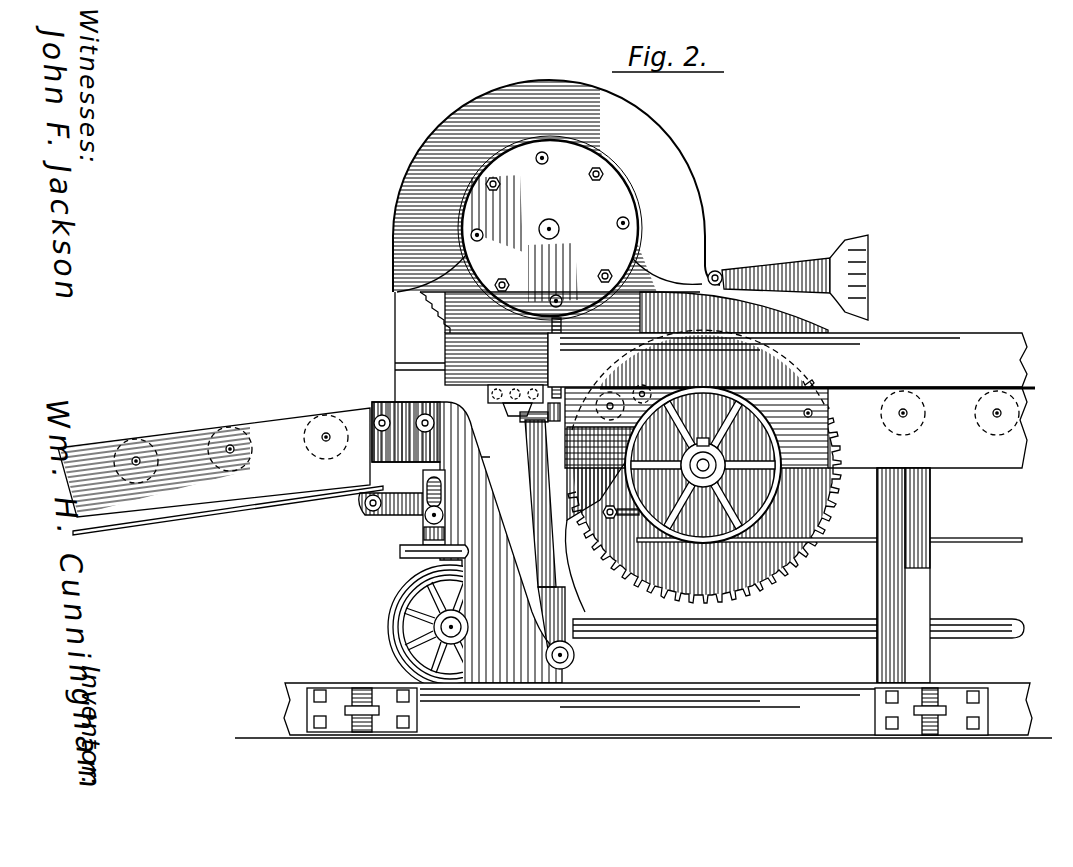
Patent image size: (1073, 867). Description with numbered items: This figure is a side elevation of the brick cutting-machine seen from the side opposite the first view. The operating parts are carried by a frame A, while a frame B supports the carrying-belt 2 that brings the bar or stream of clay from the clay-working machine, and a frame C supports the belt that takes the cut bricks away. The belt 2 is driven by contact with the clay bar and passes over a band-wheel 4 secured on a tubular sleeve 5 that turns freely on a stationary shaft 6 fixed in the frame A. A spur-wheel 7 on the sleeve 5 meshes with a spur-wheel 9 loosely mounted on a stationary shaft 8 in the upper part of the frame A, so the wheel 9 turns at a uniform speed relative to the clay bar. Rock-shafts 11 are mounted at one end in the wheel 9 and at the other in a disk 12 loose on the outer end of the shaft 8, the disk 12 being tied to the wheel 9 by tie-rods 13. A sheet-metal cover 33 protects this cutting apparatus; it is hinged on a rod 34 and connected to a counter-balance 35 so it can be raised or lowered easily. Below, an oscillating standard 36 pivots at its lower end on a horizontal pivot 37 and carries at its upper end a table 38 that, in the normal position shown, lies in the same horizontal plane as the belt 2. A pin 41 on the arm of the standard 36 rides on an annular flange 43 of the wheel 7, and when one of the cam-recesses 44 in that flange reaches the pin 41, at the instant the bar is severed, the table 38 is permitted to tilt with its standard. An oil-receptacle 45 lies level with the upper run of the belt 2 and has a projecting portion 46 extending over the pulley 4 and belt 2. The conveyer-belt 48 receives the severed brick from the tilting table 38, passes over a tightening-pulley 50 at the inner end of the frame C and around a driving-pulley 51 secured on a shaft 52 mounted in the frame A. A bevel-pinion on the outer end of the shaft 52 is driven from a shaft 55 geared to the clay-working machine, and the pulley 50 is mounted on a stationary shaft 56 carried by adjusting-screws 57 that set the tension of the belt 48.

The carrying-belt 2 is at (1030, 388).
The band-wheel 4 is at (815, 538).
The tubular shaft or sleeve 5 is at (745, 476).
The stationary shaft 6 is at (787, 360).
The spur-wheel 7 is at (803, 560).
The stationary shaft 8 is at (556, 228).
The spur-wheel 9 is at (420, 300).
The rock-shafts 11 is at (542, 164).
The disk 12 is at (612, 184).
The tie-rods 13 is at (501, 184).
The cover 33 is at (641, 140).
The rod 34 is at (722, 274).
The counter-balance 35 is at (870, 280).
The oscillating or rocking standard 36 is at (536, 526).
The horizontal pivot 37 is at (575, 655).
The table 38 is at (512, 411).
The pin 41 is at (608, 520).
The flange 43 is at (655, 560).
The cam-recesses 44 is at (762, 584).
The oil-receptacle 45 is at (611, 402).
The projecting portion 46 is at (660, 390).
The conveyer-belt 48 is at (342, 408).
The tightening-pulley 50 is at (402, 540).
The driving-pulley 51 is at (429, 627).
The shaft 52 is at (468, 626).
The shaft 55 is at (813, 629).
The stationary shaft 56 is at (444, 515).
The adjusting-screws 57 is at (442, 492).
The frame A is at (915, 590).
The frame B is at (796, 428).
The frame C is at (220, 471).